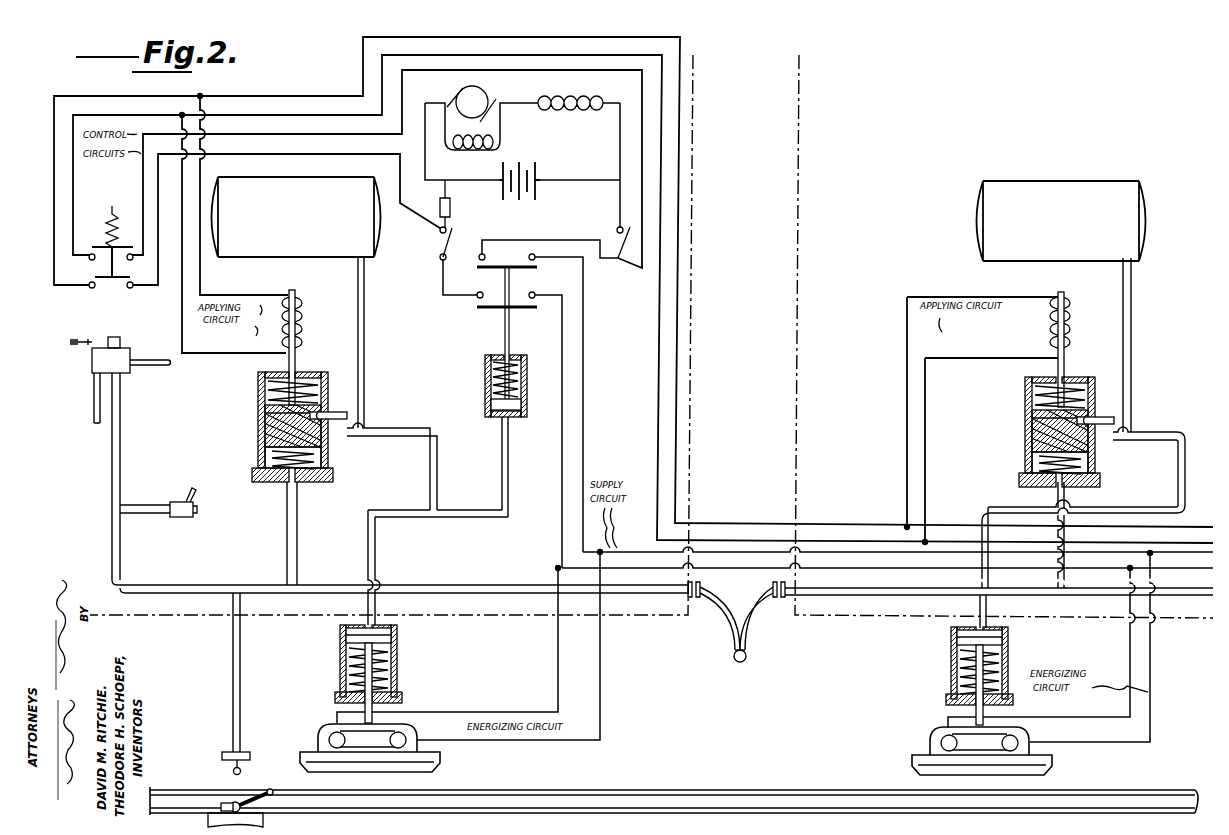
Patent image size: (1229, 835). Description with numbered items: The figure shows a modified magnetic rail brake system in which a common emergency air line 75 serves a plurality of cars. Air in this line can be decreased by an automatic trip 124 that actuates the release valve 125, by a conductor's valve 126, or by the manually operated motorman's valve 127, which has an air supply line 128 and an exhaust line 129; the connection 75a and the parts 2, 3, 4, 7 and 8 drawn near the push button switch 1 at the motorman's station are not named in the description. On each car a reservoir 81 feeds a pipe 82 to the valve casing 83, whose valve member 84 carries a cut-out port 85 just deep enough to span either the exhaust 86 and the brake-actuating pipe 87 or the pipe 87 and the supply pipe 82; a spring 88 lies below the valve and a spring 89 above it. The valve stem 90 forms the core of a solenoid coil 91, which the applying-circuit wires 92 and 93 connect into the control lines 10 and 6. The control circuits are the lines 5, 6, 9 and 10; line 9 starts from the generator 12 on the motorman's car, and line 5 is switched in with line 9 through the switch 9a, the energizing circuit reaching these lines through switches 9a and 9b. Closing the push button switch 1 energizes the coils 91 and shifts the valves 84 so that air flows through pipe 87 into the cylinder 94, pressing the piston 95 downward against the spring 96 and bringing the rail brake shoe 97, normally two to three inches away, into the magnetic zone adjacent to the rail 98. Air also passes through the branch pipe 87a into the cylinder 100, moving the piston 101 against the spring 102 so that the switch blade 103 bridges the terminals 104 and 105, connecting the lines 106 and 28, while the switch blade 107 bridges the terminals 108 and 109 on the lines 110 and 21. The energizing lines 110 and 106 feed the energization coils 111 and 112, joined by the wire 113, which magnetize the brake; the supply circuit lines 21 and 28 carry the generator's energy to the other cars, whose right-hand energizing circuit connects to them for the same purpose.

The push button switch 1 is at (88, 262).
The spring 2 is at (116, 215).
The contact bar 3 is at (91, 246).
The contact 4 is at (133, 261).
The control circuit line 5 is at (268, 123).
The control circuit line 6 is at (284, 104).
The terminal 7 is at (125, 289).
The terminal 8 is at (92, 289).
The control circuit line 9 is at (253, 143).
The switch 9a is at (616, 228).
The switch 9b is at (440, 254).
The control circuit line 10 is at (297, 84).
The generator 12 is at (486, 102).
The supply circuit line 21 is at (755, 572).
The supply circuit line 28 is at (639, 540).
The emergency air line 75 is at (494, 586).
The branch pipe 75a is at (297, 555).
The reservoir 81 is at (320, 192).
The supply pipe 82 is at (366, 347).
The valve casing 83 is at (258, 432).
The valve member 84 is at (262, 445).
The cut-out port 85 is at (258, 413).
The exhaust 86 is at (340, 410).
The brake-actuating pipe 87 is at (387, 430).
The branch pipe 87a is at (502, 460).
The spring 88 is at (258, 470).
The spring 89 is at (258, 386).
The valve stem 90 is at (296, 365).
The solenoid coil 91 is at (302, 330).
The applying circuit wire 92 is at (224, 356).
The applying circuit wire 93 is at (250, 295).
The cylinder 94 is at (391, 640).
The piston 95 is at (346, 638).
The spring 96 is at (347, 668).
The rail brake shoe 97 is at (440, 763).
The rail 98 is at (533, 777).
The cylinder 100 is at (491, 386).
The piston 101 is at (491, 405).
The spring 102 is at (485, 367).
The switch blade 103 is at (497, 266).
The terminal 104 is at (537, 256).
The terminal 105 is at (478, 248).
The energizing circuit line 106 is at (583, 298).
The switch blade 107 is at (488, 311).
The terminal 108 is at (536, 295).
The terminal 109 is at (479, 292).
The energizing circuit line 110 is at (562, 333).
The energization coil 111 is at (323, 733).
The energization coil 112 is at (408, 735).
The wire 113 is at (370, 773).
The automatic trip 124 is at (280, 773).
The release valve 125 is at (222, 768).
The conductor's valve 126 is at (178, 522).
The motorman's valve 127 is at (92, 365).
The air supply line 128 is at (94, 413).
The exhaust line 129 is at (158, 368).